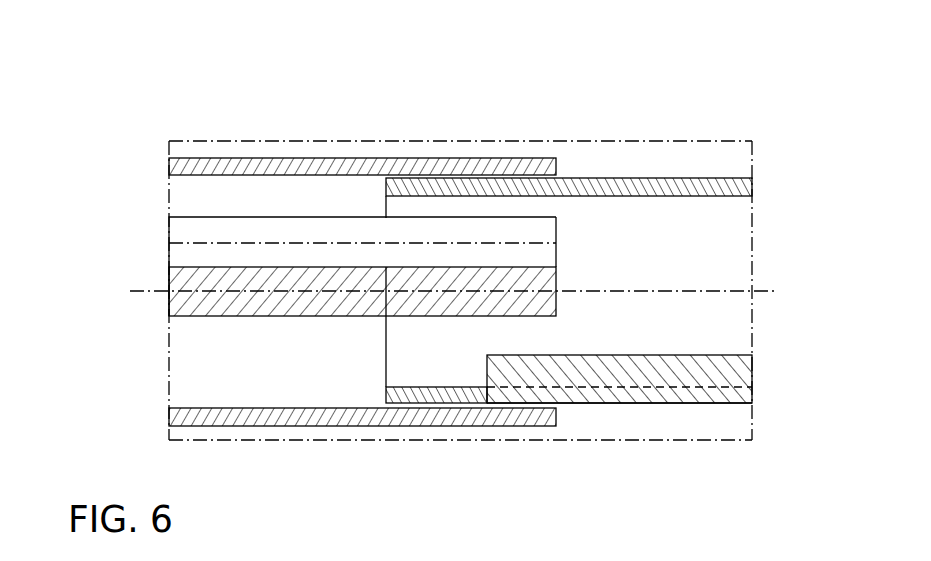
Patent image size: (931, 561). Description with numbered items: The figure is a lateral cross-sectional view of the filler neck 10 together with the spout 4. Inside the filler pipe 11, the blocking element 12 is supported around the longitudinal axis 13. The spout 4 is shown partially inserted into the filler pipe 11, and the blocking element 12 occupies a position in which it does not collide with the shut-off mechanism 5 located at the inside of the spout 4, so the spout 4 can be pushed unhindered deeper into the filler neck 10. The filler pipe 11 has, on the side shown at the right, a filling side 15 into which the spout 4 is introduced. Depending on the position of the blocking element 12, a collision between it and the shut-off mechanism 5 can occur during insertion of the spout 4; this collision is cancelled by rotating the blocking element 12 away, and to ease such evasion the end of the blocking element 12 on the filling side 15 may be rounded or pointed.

The filler neck 10 is at (434, 125).
The filler pipe 11 is at (243, 164).
The blocking element 12 is at (547, 278).
The longitudinal axis 13 is at (142, 291).
The spout 4 is at (738, 187).
The shut-off mechanism 5 is at (738, 364).
The filling side 15 is at (507, 337).